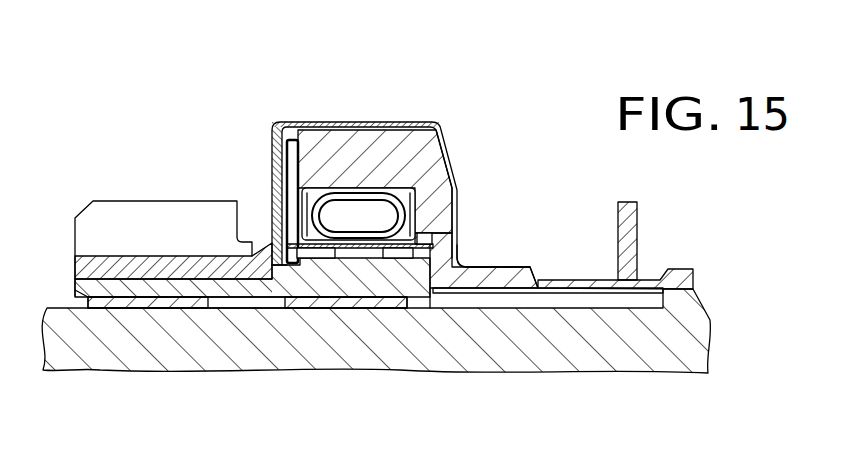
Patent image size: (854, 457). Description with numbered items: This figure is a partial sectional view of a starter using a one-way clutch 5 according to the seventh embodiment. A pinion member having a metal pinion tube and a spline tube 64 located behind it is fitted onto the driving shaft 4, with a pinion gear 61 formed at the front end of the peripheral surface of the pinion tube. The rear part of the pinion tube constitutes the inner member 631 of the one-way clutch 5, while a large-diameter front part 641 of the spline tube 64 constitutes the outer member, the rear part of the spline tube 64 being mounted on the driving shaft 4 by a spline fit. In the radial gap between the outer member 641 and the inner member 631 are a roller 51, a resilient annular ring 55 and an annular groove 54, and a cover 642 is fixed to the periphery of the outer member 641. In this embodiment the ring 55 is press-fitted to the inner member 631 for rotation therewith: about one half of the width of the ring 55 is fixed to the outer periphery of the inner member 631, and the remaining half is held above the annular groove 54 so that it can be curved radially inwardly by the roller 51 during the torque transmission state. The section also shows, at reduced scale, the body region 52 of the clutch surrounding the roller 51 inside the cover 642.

The driving shaft 4 is at (120, 355).
The one-way clutch 5 is at (411, 223).
The roller 51 is at (407, 186).
The holder body 52 is at (375, 150).
The annular groove 54 is at (312, 262).
The resilient annular ring 55 is at (457, 215).
The pinion gear 61 is at (122, 212).
The inner member 631 is at (455, 258).
The spline tube 64 is at (589, 287).
The large-diameter front part of spline tube (outer member) 641 is at (387, 123).
The cover 642 is at (357, 127).